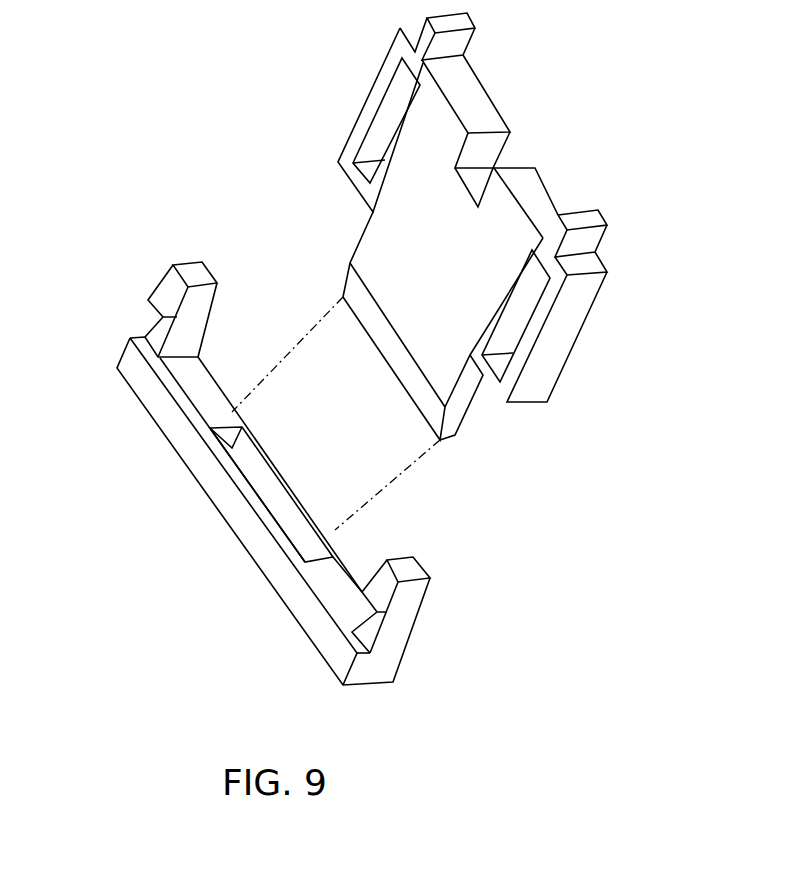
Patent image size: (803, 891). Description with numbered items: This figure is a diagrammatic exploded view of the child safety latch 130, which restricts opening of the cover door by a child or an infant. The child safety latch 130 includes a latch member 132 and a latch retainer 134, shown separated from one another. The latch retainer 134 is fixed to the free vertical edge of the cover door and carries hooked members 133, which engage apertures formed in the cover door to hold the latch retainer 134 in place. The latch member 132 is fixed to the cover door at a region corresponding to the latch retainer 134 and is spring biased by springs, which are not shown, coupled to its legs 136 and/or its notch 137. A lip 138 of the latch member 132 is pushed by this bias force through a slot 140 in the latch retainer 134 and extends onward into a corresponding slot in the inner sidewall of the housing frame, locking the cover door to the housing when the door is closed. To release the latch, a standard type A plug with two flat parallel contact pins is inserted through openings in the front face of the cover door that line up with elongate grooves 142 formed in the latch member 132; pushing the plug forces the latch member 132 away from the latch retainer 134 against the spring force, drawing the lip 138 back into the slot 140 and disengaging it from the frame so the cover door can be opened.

The child safety latch 130 is at (157, 80).
The latch member 132 is at (505, 443).
The hooked members 133 is at (172, 292).
The latch retainer 134 is at (452, 606).
The legs 136 is at (460, 22).
The notch 137 is at (480, 176).
The lip 138 is at (360, 293).
The slot 140 is at (267, 480).
The elongate grooves 142 is at (388, 117).